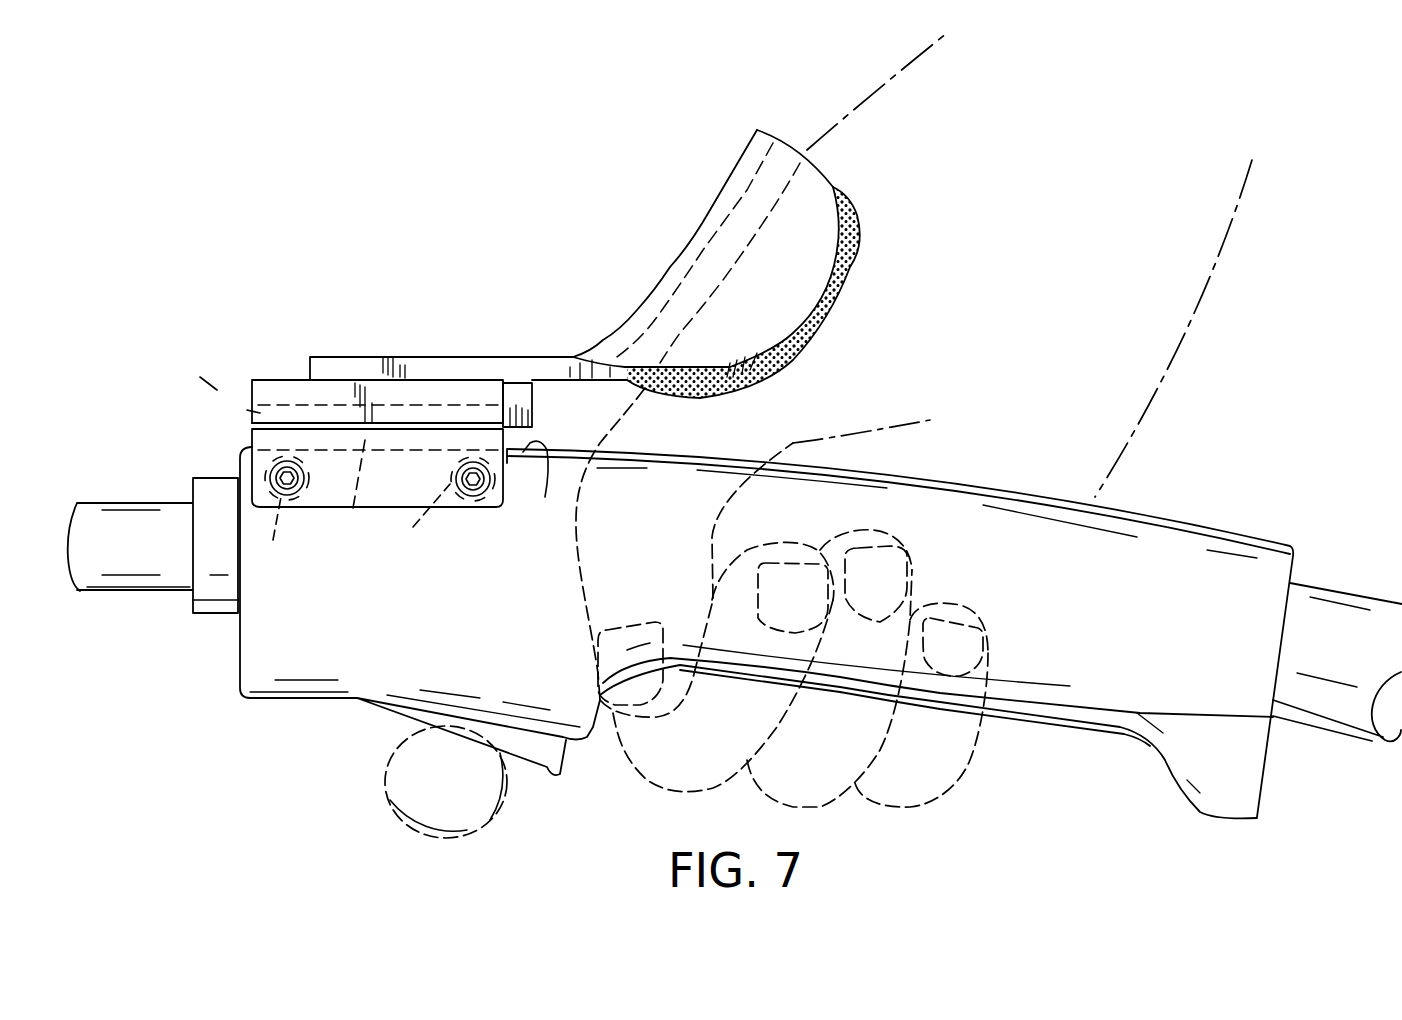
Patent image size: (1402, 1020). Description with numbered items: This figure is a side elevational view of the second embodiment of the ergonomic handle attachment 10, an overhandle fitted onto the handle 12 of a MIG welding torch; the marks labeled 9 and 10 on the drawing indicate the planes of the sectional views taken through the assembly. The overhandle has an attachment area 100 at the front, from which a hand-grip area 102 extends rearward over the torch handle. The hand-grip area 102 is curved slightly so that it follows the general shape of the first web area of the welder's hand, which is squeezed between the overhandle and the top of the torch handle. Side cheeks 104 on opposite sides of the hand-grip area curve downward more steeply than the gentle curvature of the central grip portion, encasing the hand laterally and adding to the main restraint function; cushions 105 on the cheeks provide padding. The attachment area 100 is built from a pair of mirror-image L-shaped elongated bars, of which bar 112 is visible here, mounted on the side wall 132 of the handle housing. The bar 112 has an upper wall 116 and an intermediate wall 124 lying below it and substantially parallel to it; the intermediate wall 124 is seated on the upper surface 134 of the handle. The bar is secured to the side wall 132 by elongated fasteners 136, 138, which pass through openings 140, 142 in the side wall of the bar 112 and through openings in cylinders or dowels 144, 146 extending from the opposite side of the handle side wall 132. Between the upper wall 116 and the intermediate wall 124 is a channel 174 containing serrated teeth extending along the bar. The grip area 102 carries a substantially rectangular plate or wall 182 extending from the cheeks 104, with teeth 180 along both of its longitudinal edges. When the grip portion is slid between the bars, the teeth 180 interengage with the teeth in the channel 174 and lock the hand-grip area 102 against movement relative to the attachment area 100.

The section line 9- 9 is at (200, 400).
The ergonomic handle attachment 10 is at (470, 347).
The handle 12 is at (255, 704).
The attachment area 100 is at (257, 356).
The hand-grip area 102 is at (565, 357).
The side cheeks 104 is at (797, 200).
The cushions 105 is at (840, 273).
The L-shaped elongated bar 112 is at (243, 432).
The upper wall 116 is at (293, 383).
The intermediate wall 124 is at (347, 493).
The side wall 132 is at (293, 603).
The upper surface 134 is at (540, 483).
The elongated fastener 136 is at (270, 468).
The elongated fastener 138 is at (487, 490).
The opening 140 is at (290, 492).
The opening 142 is at (462, 478).
The cylinder or dowel 144 is at (273, 536).
The cylinder or dowel 146 is at (415, 527).
The channel 174 is at (215, 378).
The teeth 180 is at (520, 414).
The plate or wall 182 is at (362, 367).